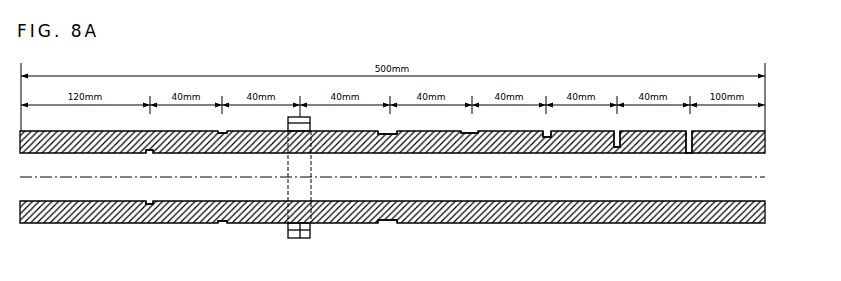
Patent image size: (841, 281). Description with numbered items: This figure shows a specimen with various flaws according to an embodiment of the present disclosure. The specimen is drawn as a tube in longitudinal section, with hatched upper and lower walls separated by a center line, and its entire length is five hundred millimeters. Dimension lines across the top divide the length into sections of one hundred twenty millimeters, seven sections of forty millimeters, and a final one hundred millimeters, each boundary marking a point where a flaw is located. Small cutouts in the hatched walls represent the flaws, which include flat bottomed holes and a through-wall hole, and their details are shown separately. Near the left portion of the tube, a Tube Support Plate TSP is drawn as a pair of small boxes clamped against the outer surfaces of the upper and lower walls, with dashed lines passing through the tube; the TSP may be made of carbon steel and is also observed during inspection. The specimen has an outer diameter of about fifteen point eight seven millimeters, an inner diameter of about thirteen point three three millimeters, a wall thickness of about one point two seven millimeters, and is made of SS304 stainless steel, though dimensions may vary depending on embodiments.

The Tube Support Plate TSP is at (299, 186).